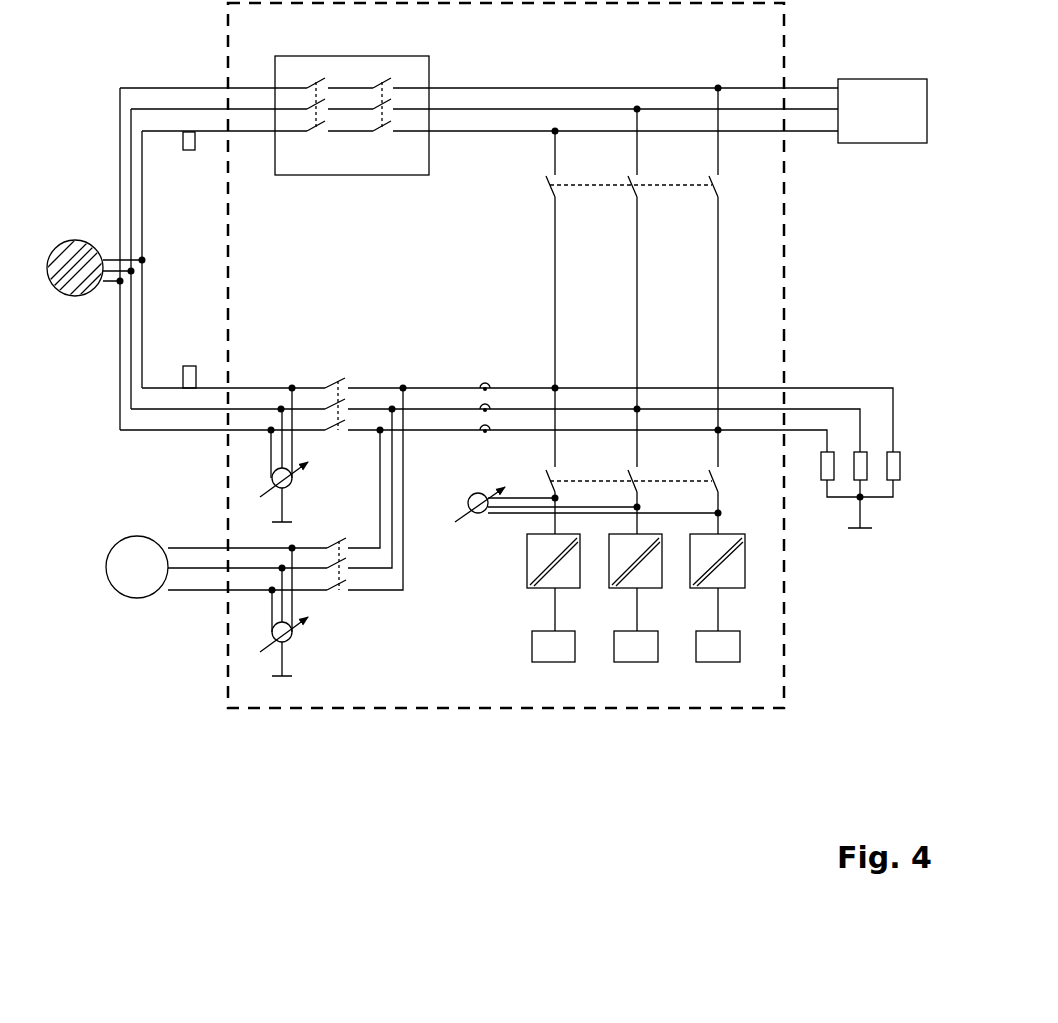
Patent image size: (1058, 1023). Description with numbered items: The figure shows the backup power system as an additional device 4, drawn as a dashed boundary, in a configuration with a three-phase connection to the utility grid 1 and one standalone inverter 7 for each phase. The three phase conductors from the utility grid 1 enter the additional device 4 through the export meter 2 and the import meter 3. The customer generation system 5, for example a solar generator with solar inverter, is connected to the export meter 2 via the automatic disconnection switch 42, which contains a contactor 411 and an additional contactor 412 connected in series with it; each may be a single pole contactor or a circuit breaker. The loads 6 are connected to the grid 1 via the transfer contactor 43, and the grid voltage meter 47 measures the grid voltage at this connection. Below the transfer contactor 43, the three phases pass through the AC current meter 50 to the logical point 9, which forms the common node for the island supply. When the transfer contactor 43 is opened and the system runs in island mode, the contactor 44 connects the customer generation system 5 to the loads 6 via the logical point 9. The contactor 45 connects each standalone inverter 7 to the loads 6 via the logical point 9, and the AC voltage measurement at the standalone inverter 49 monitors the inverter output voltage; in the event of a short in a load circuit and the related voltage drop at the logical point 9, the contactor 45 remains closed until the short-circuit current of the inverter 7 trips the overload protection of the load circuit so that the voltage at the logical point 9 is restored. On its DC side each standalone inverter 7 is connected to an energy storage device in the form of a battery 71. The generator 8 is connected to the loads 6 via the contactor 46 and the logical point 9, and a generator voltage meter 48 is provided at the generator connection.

The utility grid 1 is at (85, 266).
The export meter 2 is at (189, 154).
The import meter 3 is at (189, 362).
The additional device 4 is at (497, 355).
The customer generation system 5 is at (894, 111).
The loads 6 is at (871, 490).
The standalone inverter 7 is at (624, 561).
The generator 8 is at (216, 583).
The logical point 9 is at (510, 315).
The automatic disconnection switch 42 is at (370, 115).
The contactor 411 is at (308, 120).
The additional contactor 412 is at (383, 120).
The transfer contactor 43 is at (333, 392).
The contactor 44 is at (617, 277).
The contactor 45 is at (648, 491).
The contactor 46 is at (336, 491).
The grid voltage meter 47 is at (288, 455).
The generator voltage meter 48 is at (288, 612).
The AC voltage measurement at the standalone inverter 49 is at (586, 514).
The AC current meter 50 is at (487, 392).
The battery 71 is at (618, 625).